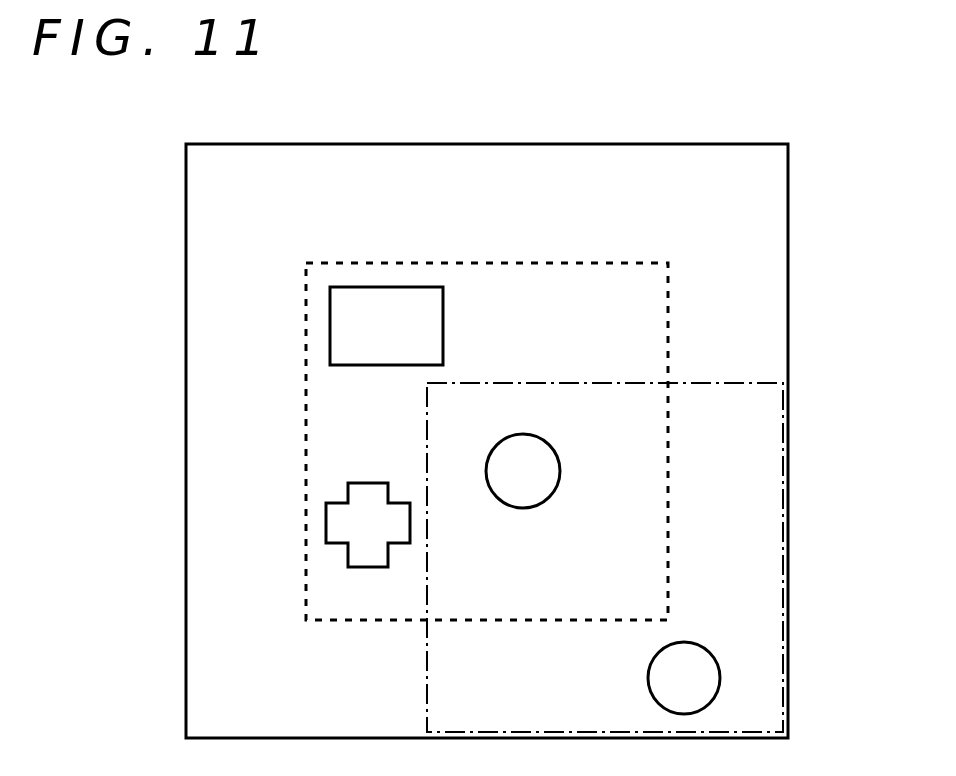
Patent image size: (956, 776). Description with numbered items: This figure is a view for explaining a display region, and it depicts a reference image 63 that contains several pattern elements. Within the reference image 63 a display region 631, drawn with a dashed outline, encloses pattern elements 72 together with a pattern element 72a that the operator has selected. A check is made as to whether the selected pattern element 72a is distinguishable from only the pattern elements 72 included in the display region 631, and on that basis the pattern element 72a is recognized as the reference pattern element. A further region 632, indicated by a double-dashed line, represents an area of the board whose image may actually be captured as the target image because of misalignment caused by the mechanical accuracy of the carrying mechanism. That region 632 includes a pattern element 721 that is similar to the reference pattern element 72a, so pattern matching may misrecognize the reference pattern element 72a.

The reference image 63 is at (497, 144).
The display region 631 is at (668, 300).
The region 632 is at (788, 500).
The pattern elements 72 is at (352, 323).
The pattern element 72a is at (507, 465).
The pattern element 721 is at (693, 675).